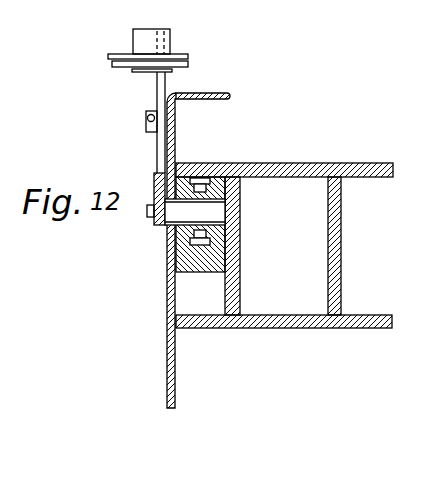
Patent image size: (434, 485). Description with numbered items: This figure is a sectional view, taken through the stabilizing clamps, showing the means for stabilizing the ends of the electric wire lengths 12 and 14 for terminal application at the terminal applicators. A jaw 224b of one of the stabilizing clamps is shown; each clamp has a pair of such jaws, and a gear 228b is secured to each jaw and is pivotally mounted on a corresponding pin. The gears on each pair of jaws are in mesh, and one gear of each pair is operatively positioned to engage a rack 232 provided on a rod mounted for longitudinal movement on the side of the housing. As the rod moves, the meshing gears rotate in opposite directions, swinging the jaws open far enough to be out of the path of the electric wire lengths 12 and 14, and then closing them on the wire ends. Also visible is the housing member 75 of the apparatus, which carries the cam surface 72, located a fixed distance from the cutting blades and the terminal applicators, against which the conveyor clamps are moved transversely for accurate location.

The electric wire 12 is at (181, 53).
The electric wire 14 is at (177, 73).
The jaw 224b is at (161, 80).
The cam surface 72 is at (232, 96).
The housing member 75 is at (218, 94).
The gear 228b is at (207, 168).
The rack 232 is at (177, 259).